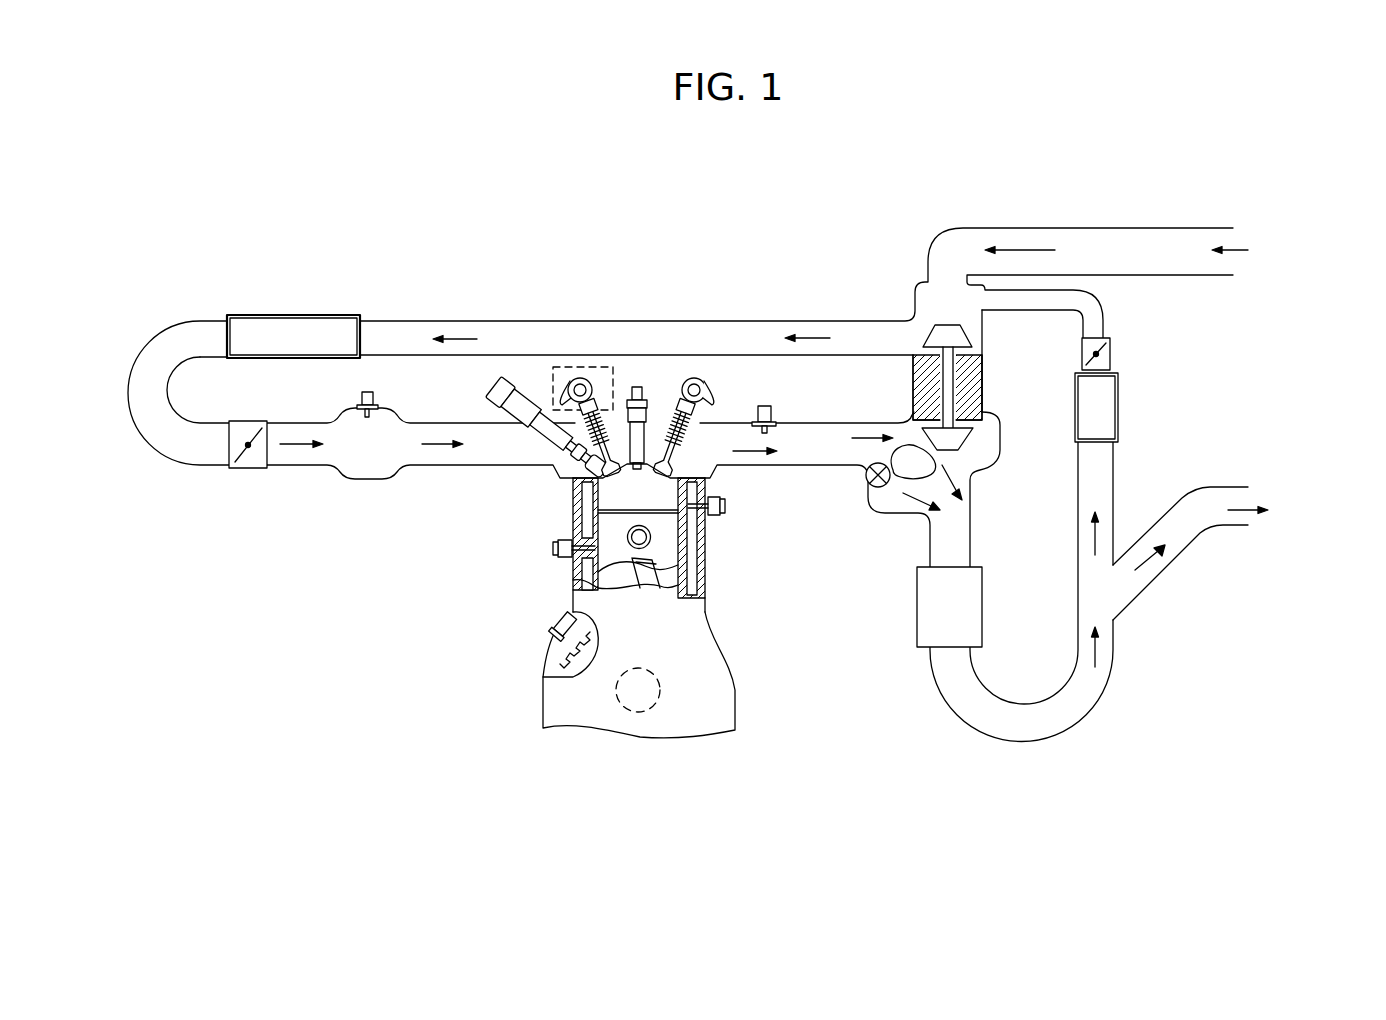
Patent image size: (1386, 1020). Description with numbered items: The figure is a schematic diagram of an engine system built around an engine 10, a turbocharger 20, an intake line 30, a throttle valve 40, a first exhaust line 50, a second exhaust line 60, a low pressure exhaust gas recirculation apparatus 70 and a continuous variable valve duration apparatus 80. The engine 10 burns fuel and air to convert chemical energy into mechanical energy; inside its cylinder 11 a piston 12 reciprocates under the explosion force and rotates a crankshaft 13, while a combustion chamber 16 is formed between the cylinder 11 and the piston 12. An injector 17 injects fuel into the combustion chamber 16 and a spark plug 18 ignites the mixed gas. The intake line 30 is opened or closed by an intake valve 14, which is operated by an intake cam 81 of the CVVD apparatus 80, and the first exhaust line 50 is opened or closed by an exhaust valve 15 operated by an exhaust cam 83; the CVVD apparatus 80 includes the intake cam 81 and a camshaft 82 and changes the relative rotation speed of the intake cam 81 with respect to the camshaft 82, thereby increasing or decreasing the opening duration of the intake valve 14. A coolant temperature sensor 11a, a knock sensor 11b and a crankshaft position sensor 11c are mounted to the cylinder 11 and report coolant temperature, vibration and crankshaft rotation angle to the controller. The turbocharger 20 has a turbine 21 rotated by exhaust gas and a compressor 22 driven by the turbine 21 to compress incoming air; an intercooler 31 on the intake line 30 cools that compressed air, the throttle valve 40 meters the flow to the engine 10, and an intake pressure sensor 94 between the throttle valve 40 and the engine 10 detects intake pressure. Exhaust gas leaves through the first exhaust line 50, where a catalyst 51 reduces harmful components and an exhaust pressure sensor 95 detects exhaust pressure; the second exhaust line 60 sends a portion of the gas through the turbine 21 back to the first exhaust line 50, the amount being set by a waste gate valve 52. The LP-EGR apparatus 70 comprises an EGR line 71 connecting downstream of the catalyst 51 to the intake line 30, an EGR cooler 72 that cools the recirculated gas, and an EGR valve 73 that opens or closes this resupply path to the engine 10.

The engine 10 is at (744, 652).
The cylinder 11 is at (573, 594).
The coolant temperature sensor 11a is at (723, 506).
The knock sensor 11b is at (553, 548).
The crankshaft position sensor 11c is at (553, 622).
The piston 12 is at (668, 548).
The crankshaft 13 is at (643, 700).
The intake valve 14 is at (617, 460).
The exhaust valve 15 is at (652, 462).
The combustion chamber 16 is at (617, 495).
The injector 17 is at (638, 387).
The spark plug 18 is at (512, 405).
The turbocharger 20 is at (991, 387).
The turbine 21 is at (963, 417).
The compressor 22 is at (960, 338).
The intake line 30 is at (400, 321).
The intercooler 31 is at (331, 315).
The throttle valve 40 is at (246, 468).
The first exhaust line 50 is at (827, 466).
The catalyst 51 is at (917, 636).
The waste gate valve 52 is at (869, 490).
The second exhaust line 60 is at (988, 450).
The low pressure exhaust gas recirculation (LP-EGR) apparatus 70 is at (1211, 502).
The EGR line 71 is at (1100, 458).
The EGR cooler 72 is at (1118, 400).
The EGR valve 73 is at (1122, 358).
The continuous variable valve duration (CVVD) apparatus 80 is at (604, 367).
The intake cam 81 is at (563, 397).
The camshaft 82 is at (578, 384).
The exhaust cam 83 is at (704, 392).
The intake pressure sensor 94 is at (358, 398).
The exhaust pressure sensor 95 is at (765, 406).